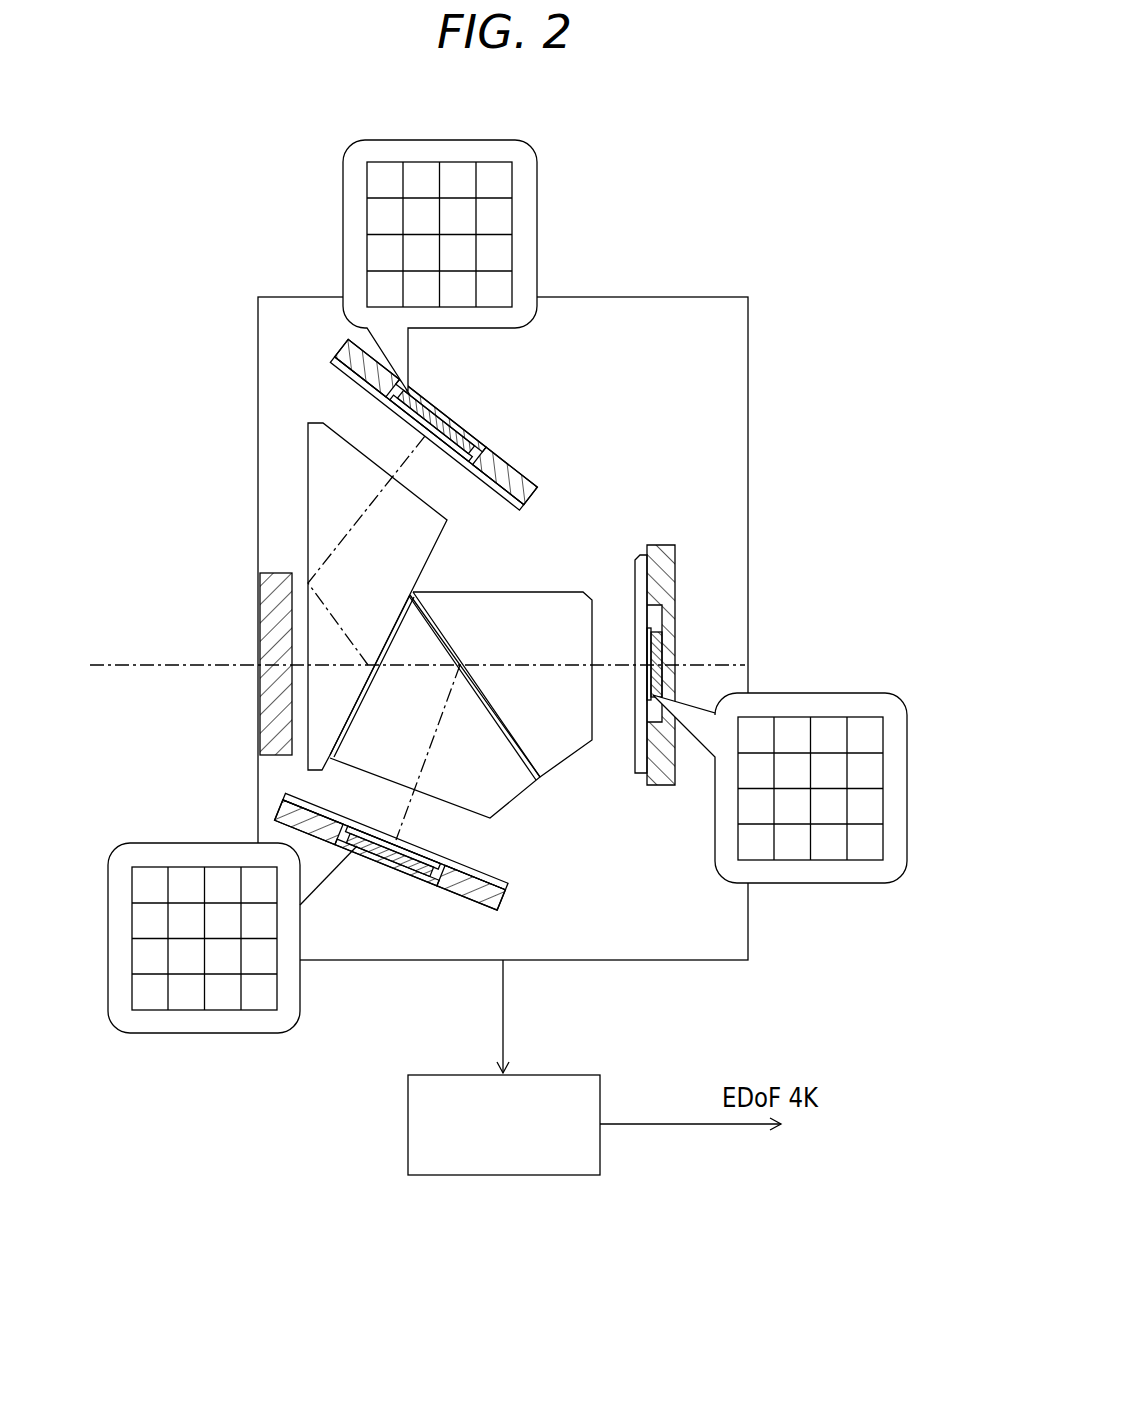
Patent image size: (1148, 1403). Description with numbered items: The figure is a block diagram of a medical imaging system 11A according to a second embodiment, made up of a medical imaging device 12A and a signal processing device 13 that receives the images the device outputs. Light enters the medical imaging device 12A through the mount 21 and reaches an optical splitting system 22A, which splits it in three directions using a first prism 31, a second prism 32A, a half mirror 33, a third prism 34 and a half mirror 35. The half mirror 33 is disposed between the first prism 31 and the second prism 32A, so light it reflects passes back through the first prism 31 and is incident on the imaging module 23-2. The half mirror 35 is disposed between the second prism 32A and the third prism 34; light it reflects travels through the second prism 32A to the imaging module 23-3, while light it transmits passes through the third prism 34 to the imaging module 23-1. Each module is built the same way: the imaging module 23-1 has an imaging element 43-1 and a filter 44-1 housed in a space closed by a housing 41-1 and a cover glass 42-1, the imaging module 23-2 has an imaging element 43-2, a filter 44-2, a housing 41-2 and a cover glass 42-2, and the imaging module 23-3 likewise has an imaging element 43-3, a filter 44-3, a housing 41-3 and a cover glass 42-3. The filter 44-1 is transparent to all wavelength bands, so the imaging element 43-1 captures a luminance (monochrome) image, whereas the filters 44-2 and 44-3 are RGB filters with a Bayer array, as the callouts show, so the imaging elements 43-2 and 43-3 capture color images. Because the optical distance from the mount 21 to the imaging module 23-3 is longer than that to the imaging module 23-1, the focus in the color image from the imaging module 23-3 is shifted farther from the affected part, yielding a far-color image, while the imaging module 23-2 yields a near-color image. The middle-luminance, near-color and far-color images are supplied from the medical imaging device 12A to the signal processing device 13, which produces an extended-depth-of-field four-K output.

The medical imaging system 11A is at (498, 586).
The medical imaging device 12A is at (258, 378).
The signal processing device 13 is at (503, 1177).
The mount 21 is at (262, 628).
The optical splitting system 22A is at (415, 637).
The imaging module 23-1 is at (722, 656).
The imaging module 23-2 is at (465, 339).
The imaging module 23-3 is at (343, 908).
The first prism 31 is at (308, 441).
The second prism 32A is at (433, 797).
The half mirror 33 is at (345, 712).
The third prism 34 is at (493, 590).
The half mirror 35 is at (526, 773).
The housing 41-1 is at (661, 545).
The housing 41-2 is at (530, 478).
The housing 41-3 is at (505, 900).
The cover glass 42-1 is at (637, 563).
The cover glass 42-2 is at (490, 490).
The cover glass 42-3 is at (490, 869).
The imaging element 43-1 is at (659, 645).
The imaging element 43-2 is at (465, 445).
The imaging element 43-3 is at (418, 884).
The filter 44-1 is at (642, 640).
The filter 44-2 is at (485, 448).
The filter 44-3 is at (359, 844).